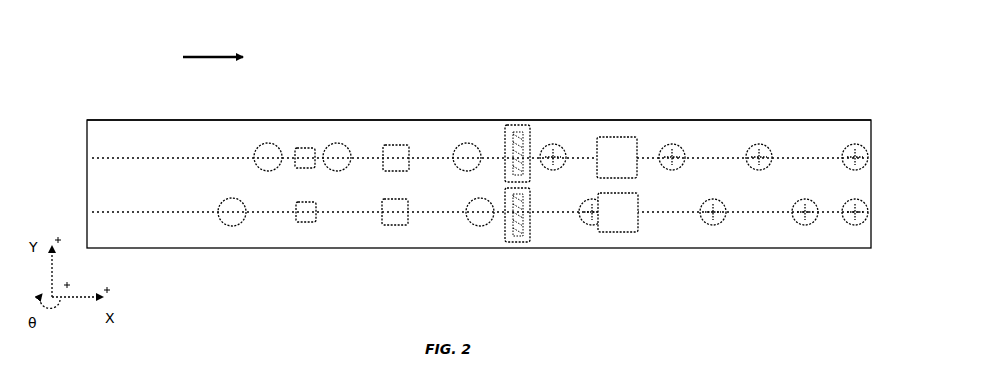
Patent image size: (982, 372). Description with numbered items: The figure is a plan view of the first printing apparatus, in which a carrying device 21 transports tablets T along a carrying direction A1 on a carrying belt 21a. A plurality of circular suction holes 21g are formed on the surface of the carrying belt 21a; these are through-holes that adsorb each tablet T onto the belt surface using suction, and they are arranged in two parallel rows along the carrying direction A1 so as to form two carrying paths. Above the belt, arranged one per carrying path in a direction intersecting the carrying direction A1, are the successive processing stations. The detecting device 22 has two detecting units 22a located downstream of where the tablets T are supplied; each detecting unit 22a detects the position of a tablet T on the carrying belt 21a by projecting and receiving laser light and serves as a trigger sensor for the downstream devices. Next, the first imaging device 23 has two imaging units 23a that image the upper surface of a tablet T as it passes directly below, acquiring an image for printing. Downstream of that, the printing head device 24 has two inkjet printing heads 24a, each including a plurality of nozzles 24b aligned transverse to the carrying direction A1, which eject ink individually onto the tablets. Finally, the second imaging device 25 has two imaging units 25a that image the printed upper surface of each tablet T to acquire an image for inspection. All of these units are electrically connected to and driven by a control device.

The carrying device 21 is at (108, 88).
The carrying belt 21a is at (123, 123).
The suction holes 21g is at (100, 157).
The detecting device 22 is at (329, 146).
The detecting unit 22a is at (306, 148).
The first imaging device 23 is at (438, 148).
The imaging unit 23a is at (397, 145).
The printing head device 24 is at (516, 154).
The printing head 24a is at (518, 126).
The nozzles 24b is at (505, 124).
The second imaging device 25 is at (604, 151).
The imaging unit 25a is at (617, 137).
The tablet T is at (268, 143).
The carrying direction A1 is at (213, 55).